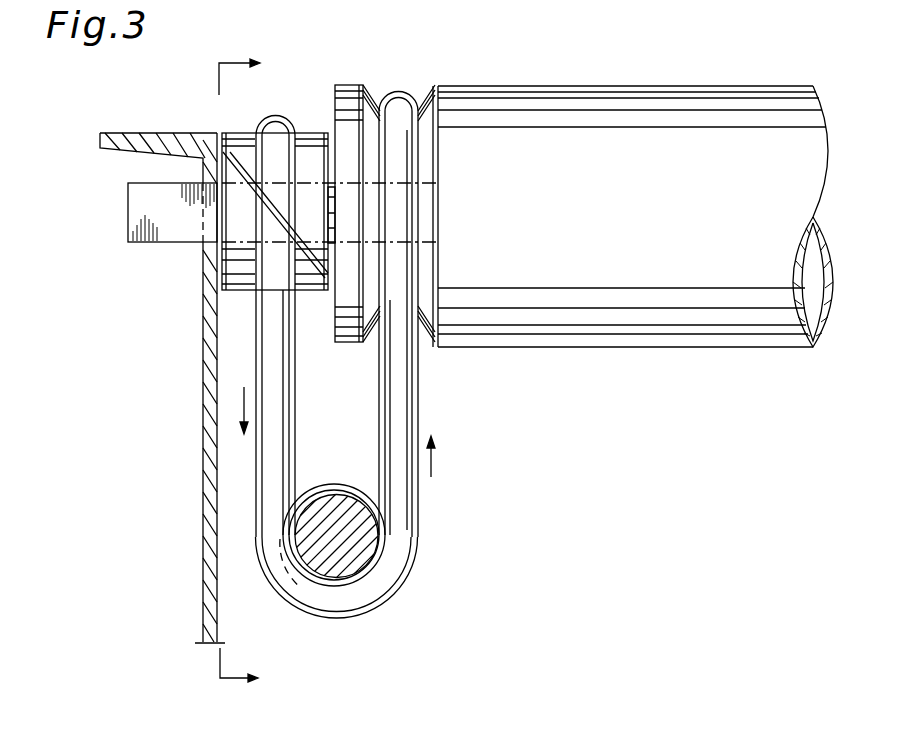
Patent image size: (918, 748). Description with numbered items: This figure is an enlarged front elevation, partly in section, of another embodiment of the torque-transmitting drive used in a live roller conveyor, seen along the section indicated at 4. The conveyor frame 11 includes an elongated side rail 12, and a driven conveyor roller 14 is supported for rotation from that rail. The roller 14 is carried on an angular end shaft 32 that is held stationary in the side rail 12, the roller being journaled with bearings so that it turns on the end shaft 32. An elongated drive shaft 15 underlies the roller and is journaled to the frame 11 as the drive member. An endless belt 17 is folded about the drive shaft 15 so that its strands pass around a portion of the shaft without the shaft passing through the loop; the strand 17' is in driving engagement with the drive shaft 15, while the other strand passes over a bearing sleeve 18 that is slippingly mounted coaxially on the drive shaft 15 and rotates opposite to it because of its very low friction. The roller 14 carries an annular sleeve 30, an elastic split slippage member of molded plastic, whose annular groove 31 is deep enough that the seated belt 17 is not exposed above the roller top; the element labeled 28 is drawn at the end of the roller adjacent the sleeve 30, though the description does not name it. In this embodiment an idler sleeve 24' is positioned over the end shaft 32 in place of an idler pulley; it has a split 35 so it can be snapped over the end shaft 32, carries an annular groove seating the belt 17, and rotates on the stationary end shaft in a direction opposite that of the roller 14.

The section line 4- 4 is at (250, 368).
The frame 11 is at (202, 362).
The side rail 12 is at (202, 503).
The driven conveyor roller 14 is at (691, 196).
The drive shaft 15 is at (355, 545).
The endless belt 17 is at (337, 315).
The belt strand 17' is at (337, 604).
The bearing sleeve 18 is at (337, 483).
The idler sleeve 24' is at (275, 181).
The end plate 28 is at (438, 183).
The annular sleeve 30 is at (422, 97).
The annular groove 31 is at (381, 98).
The end shaft 32 is at (150, 244).
The split 35 is at (320, 290).